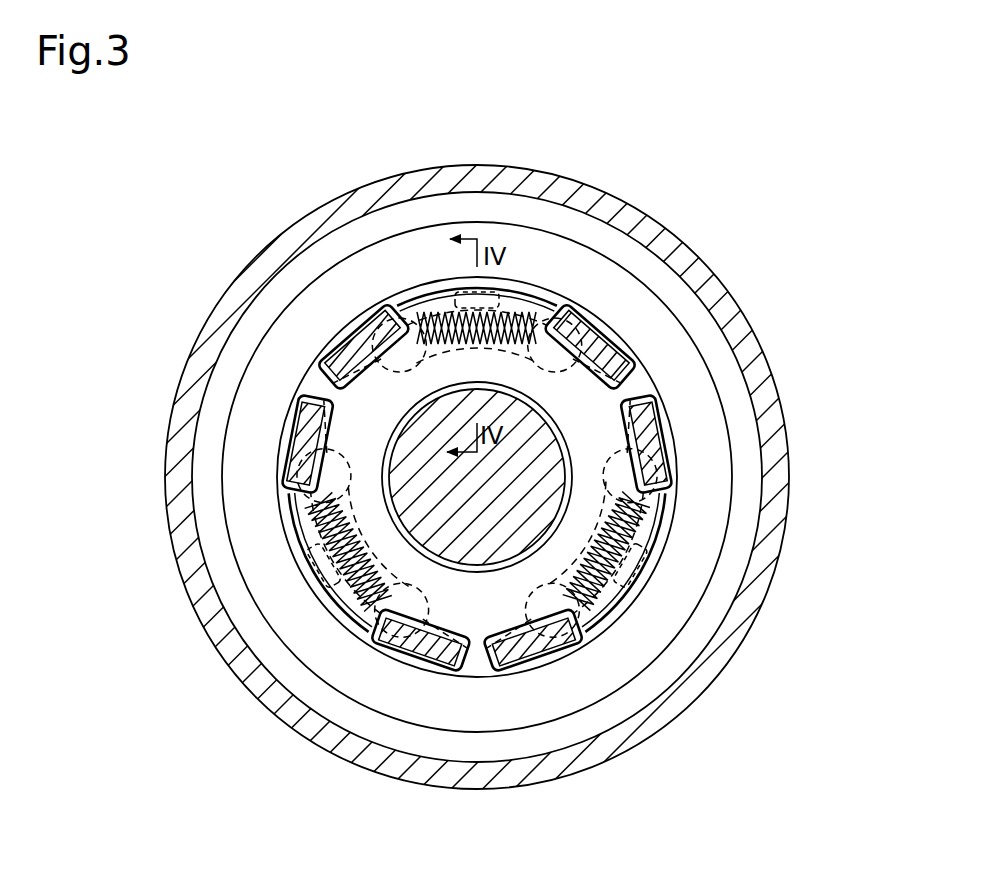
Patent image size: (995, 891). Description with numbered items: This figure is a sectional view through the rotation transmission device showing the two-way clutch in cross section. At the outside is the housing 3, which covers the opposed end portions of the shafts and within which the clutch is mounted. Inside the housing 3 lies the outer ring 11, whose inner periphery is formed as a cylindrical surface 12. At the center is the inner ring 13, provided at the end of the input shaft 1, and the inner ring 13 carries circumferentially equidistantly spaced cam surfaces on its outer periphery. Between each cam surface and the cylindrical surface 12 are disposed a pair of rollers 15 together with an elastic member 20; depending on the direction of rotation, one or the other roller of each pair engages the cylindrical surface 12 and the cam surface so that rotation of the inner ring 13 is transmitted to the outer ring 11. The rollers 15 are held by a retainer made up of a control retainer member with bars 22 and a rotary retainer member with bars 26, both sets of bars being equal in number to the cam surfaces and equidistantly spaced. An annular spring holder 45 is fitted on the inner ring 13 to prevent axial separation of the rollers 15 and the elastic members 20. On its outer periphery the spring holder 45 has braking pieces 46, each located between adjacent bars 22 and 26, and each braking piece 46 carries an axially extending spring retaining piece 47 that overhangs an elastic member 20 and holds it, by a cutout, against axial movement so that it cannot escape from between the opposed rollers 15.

The input shaft 1 is at (413, 443).
The housing 3 is at (215, 318).
The outer ring 11 is at (343, 280).
The cylindrical surface 12 is at (418, 286).
The inner ring 13 is at (348, 438).
The rollers 15 is at (572, 300).
The elastic member 20 is at (585, 290).
The bars 22 is at (650, 425).
The bars 26 is at (620, 363).
The spring holder 45 is at (647, 410).
The braking pieces 46 is at (522, 302).
The spring retaining piece 47 is at (455, 290).